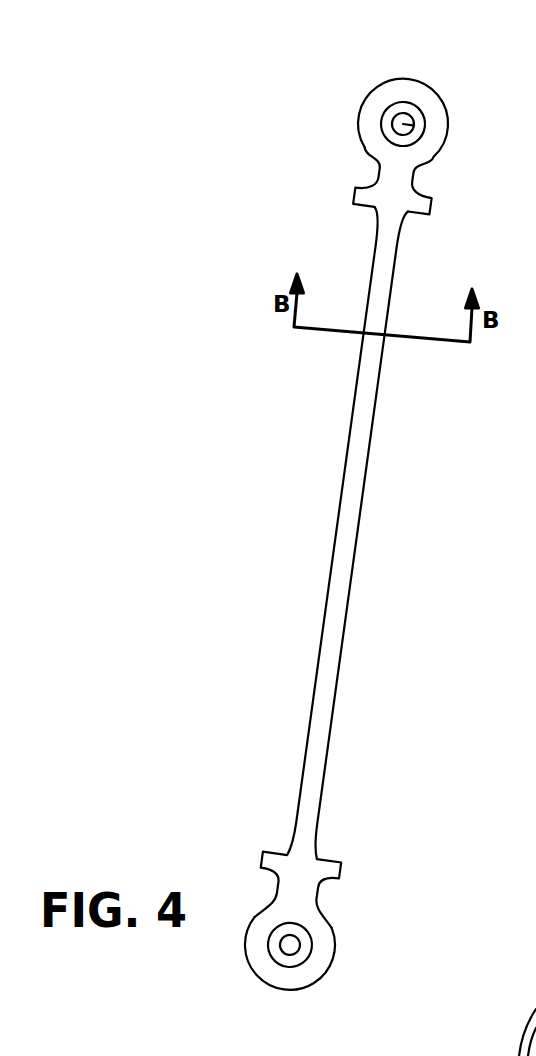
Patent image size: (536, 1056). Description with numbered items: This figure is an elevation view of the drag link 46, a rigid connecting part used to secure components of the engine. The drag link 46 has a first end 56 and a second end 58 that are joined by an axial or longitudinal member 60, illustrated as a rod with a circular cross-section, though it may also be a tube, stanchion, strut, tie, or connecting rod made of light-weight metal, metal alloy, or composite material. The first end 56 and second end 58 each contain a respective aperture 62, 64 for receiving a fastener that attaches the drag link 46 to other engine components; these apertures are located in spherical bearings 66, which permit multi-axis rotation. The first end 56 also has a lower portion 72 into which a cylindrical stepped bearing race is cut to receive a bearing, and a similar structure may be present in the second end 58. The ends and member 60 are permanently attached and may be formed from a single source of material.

The drag link 46 is at (329, 513).
The first end 56 is at (450, 125).
The second end 58 is at (245, 944).
The axial or longitudinal member 60 is at (350, 511).
The aperture 62 is at (382, 122).
The aperture 64 is at (290, 945).
The spherical bearings 66 is at (422, 117).
The lower portion 72 is at (422, 202).